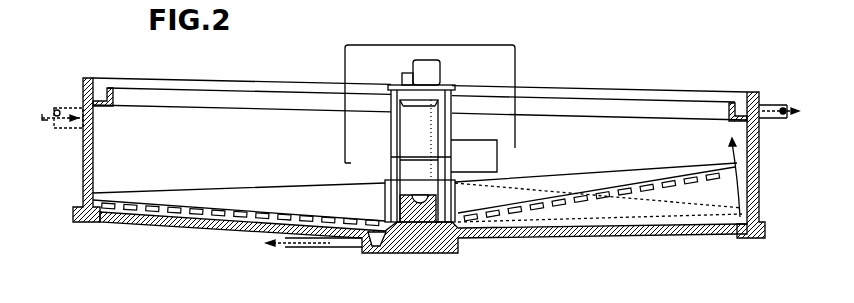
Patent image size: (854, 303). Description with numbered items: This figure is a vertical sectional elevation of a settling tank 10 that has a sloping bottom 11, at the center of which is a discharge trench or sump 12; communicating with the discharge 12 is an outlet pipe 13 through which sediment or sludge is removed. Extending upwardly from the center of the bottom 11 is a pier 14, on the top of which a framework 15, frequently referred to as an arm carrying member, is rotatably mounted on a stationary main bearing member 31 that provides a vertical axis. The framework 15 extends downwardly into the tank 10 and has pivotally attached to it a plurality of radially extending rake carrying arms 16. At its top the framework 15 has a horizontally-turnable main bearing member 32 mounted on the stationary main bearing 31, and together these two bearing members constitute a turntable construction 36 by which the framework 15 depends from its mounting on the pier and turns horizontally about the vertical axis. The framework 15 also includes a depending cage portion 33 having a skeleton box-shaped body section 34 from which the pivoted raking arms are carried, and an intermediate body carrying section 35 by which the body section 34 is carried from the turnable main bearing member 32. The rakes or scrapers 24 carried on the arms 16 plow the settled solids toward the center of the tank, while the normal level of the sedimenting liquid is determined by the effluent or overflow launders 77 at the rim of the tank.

The settling tank 10 is at (212, 133).
The sloping bottom 11 is at (228, 228).
The discharge trench or sump 12 is at (378, 243).
The outlet pipe 13 is at (312, 243).
The pier 14 is at (418, 125).
The framework 15 is at (452, 140).
The rake carrying arms 16 is at (267, 195).
The rakes or scrapers 24 is at (567, 203).
The stationary main bearing member 31 is at (392, 137).
The horizontally-turnable main bearing member 32 is at (392, 88).
The depending cage portion 33 is at (497, 159).
The skeleton box-shaped body section 34 is at (409, 192).
The intermediate body carrying section 35 is at (419, 149).
The turntable construction 36 is at (345, 127).
The effluent or overflow launders 77 is at (295, 92).